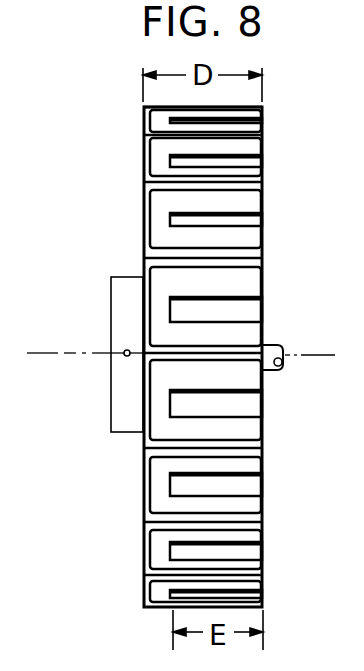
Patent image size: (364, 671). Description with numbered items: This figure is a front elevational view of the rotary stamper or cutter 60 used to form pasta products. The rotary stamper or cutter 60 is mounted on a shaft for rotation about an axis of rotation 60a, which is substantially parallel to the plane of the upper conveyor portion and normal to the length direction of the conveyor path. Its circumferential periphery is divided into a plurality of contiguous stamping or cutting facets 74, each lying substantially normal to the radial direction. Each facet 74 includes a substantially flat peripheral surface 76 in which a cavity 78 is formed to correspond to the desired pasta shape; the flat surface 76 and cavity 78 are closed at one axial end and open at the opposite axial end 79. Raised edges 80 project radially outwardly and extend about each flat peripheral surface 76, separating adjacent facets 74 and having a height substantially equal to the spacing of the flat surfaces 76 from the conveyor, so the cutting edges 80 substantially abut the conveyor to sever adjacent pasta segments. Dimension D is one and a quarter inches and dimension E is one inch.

The rotary stamper or cutter 60 is at (133, 205).
The axis of rotation 60a is at (62, 355).
The stamping surface or facet 74 is at (292, 251).
The flat peripheral surface 76 is at (263, 343).
The cavity 78 is at (272, 403).
The open axial end 79 is at (262, 233).
The raised edges 80 is at (262, 450).